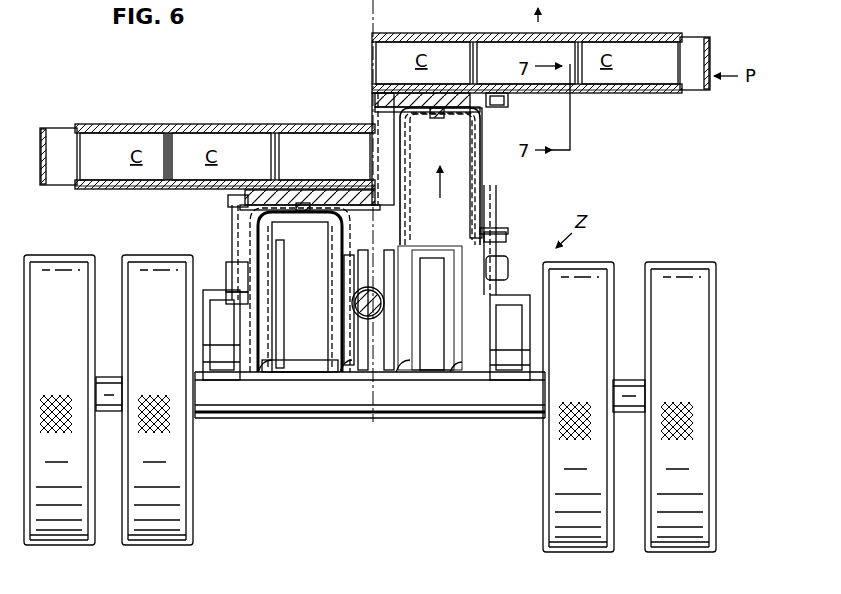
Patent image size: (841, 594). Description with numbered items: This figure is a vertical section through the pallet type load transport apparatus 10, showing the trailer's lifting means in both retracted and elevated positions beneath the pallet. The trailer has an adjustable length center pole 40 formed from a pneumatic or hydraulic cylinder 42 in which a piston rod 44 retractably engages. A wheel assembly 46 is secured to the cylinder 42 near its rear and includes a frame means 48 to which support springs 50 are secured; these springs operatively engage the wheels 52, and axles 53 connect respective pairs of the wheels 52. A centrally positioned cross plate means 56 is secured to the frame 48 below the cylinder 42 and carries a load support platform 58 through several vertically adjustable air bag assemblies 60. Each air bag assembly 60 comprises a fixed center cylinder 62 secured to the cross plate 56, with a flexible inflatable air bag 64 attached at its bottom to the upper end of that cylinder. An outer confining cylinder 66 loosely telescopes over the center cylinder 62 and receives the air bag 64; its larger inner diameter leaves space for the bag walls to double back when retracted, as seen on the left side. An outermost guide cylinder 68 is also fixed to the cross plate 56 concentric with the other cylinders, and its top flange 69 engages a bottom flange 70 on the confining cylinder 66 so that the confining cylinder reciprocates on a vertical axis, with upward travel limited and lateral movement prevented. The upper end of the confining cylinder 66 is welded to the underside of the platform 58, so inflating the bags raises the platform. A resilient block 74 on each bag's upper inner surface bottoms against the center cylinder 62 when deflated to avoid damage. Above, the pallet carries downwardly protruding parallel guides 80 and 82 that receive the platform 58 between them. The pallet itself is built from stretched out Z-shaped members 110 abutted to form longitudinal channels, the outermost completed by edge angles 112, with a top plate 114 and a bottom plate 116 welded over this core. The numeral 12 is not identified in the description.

The pallet type load transport apparatus 10 is at (694, 194).
The conveyor 12 is at (94, 121).
The adjustable length center pole 40 is at (378, 286).
The cylinder 42 is at (383, 299).
The piston rod 44 is at (392, 323).
The wheel assembly 46 is at (616, 264).
The frame means 48 is at (499, 231).
The support springs 50 is at (220, 320).
The wheels 52 is at (122, 548).
The axles 53 is at (326, 422).
The cross plate means 56 is at (300, 358).
The load support platform 58 is at (293, 192).
The air bag assemblies 60 is at (484, 189).
The center cylinder 62 is at (270, 334).
The air bag 64 is at (232, 222).
The confining cylinder 66 is at (490, 136).
The guide cylinder 68 is at (270, 312).
The top flange 69 is at (228, 265).
The bottom flange 70 is at (494, 272).
The resilient block 74 is at (306, 200).
The guide 80 is at (505, 100).
The guide 82 is at (232, 204).
The Z-shaped members 110 is at (295, 124).
The edge angles 112 is at (76, 158).
The top plate 114 is at (169, 128).
The bottom plate 116 is at (100, 189).